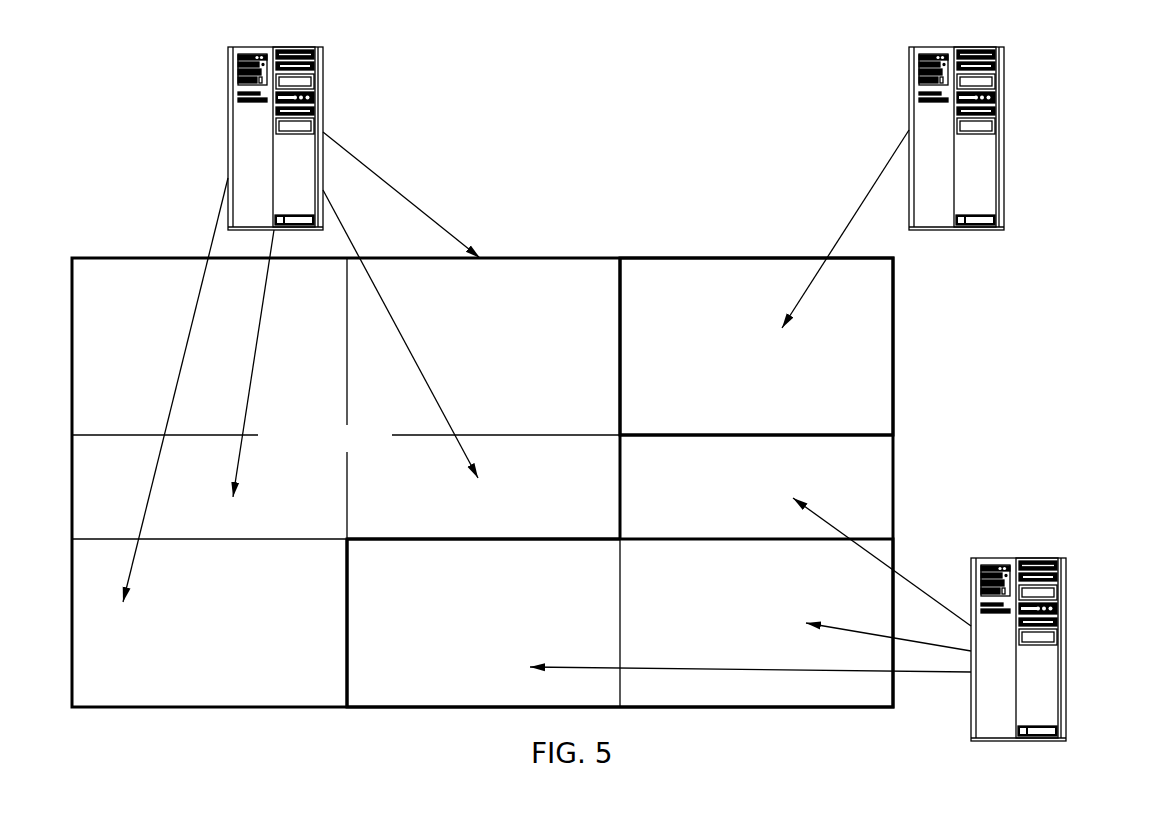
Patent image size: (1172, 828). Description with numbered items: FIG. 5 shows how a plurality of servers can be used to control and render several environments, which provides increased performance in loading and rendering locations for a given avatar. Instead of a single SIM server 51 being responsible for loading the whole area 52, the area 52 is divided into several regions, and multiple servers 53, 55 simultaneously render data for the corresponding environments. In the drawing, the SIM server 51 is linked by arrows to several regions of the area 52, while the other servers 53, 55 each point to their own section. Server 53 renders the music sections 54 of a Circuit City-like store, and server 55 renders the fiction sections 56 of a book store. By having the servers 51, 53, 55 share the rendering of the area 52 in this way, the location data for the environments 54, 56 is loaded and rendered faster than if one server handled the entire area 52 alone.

The SIM server 51 is at (228, 96).
The area 52 is at (386, 447).
The server 53 is at (1005, 113).
The music sections 54 is at (761, 291).
The server 55 is at (1067, 687).
The fiction sections 56 is at (497, 575).